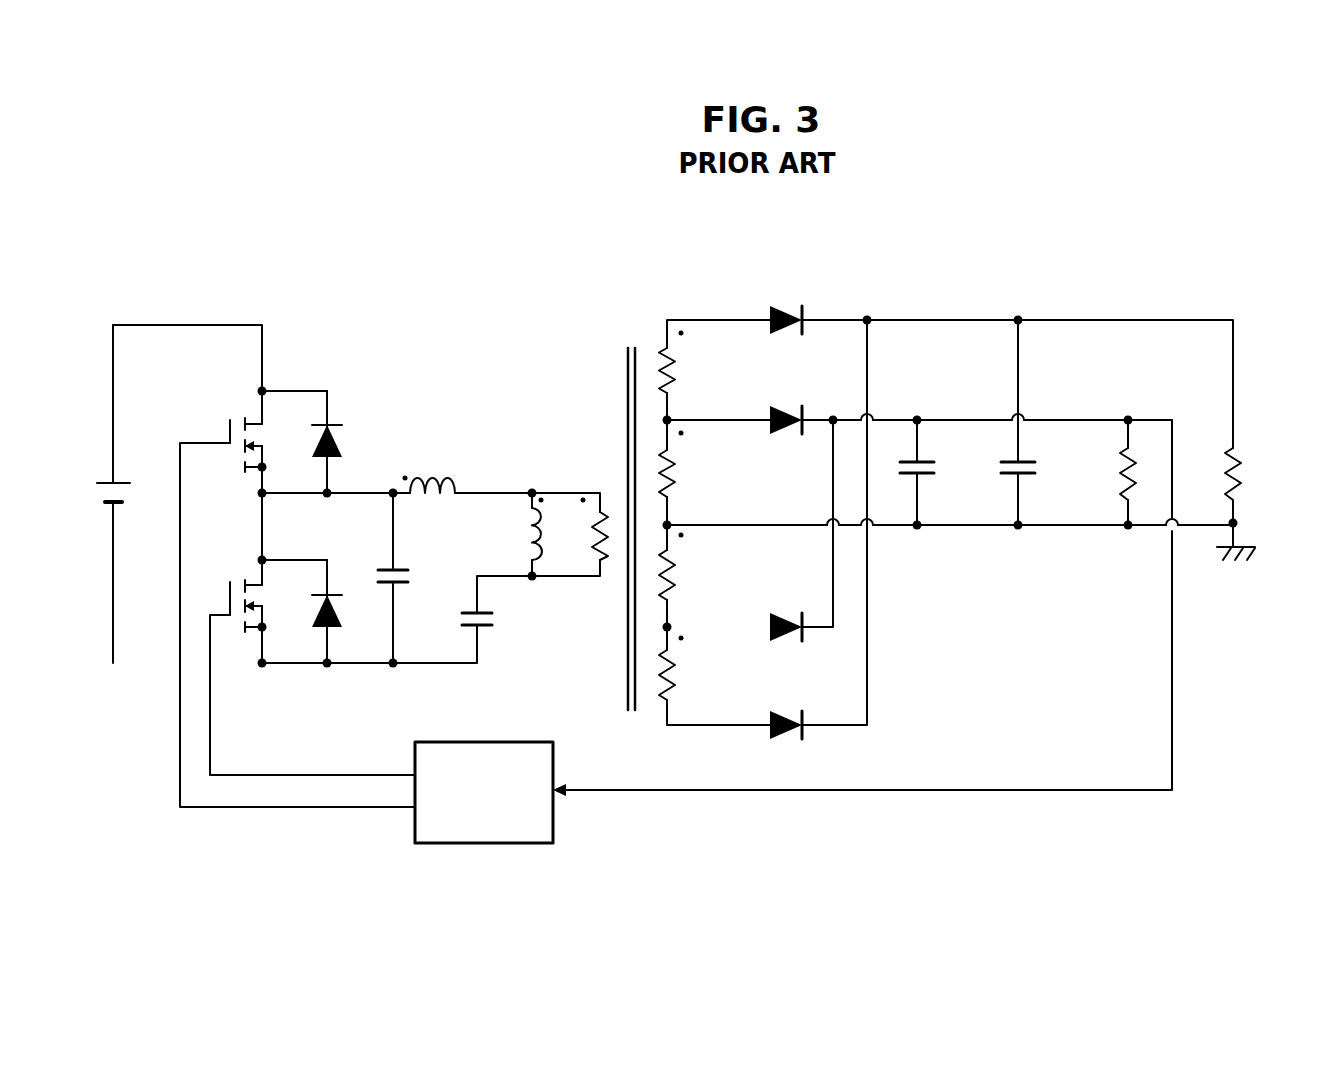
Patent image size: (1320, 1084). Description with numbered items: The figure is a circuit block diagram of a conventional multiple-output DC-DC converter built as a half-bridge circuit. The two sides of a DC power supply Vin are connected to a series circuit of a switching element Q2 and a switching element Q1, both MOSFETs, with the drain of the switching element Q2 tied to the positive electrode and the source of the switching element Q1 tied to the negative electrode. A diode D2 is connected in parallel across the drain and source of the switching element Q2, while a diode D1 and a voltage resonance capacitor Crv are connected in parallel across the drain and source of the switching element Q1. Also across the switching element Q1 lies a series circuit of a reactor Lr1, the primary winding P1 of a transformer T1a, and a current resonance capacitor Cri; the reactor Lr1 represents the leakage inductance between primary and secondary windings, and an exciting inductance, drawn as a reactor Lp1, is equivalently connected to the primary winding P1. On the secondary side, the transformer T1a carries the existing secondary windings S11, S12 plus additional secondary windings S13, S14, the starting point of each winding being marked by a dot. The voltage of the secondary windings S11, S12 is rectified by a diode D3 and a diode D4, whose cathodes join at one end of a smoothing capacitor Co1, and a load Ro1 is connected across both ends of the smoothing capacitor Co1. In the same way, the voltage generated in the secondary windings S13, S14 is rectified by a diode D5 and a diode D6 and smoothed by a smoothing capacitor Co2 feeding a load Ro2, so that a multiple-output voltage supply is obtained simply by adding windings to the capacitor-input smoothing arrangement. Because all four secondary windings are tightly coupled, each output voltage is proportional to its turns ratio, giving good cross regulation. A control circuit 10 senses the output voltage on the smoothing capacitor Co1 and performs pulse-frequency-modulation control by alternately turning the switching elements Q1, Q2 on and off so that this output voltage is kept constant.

The DC power supply Vin is at (122, 494).
The switching element Q2 is at (233, 452).
The switching element Q1 is at (236, 619).
The diode D2 is at (336, 442).
The diode D1 is at (319, 611).
The reactor Lr1 is at (432, 468).
The voltage resonance capacitor Crv is at (405, 591).
The current resonance capacitor Cri is at (489, 632).
The reactor Lp1 is at (516, 534).
The primary winding P1 is at (589, 536).
The transformer T1a is at (629, 517).
The secondary winding S13 is at (687, 370).
The secondary winding S11 is at (687, 473).
The secondary winding S12 is at (687, 575).
The secondary winding S14 is at (687, 675).
The diode D5 is at (786, 333).
The diode D3 is at (786, 432).
The diode D4 is at (786, 611).
The diode D6 is at (786, 711).
The smoothing capacitor Co1 is at (930, 482).
The smoothing capacitor Co2 is at (1031, 482).
The load Ro1 is at (1106, 474).
The load Ro2 is at (1255, 474).
The control circuit 10 is at (553, 829).